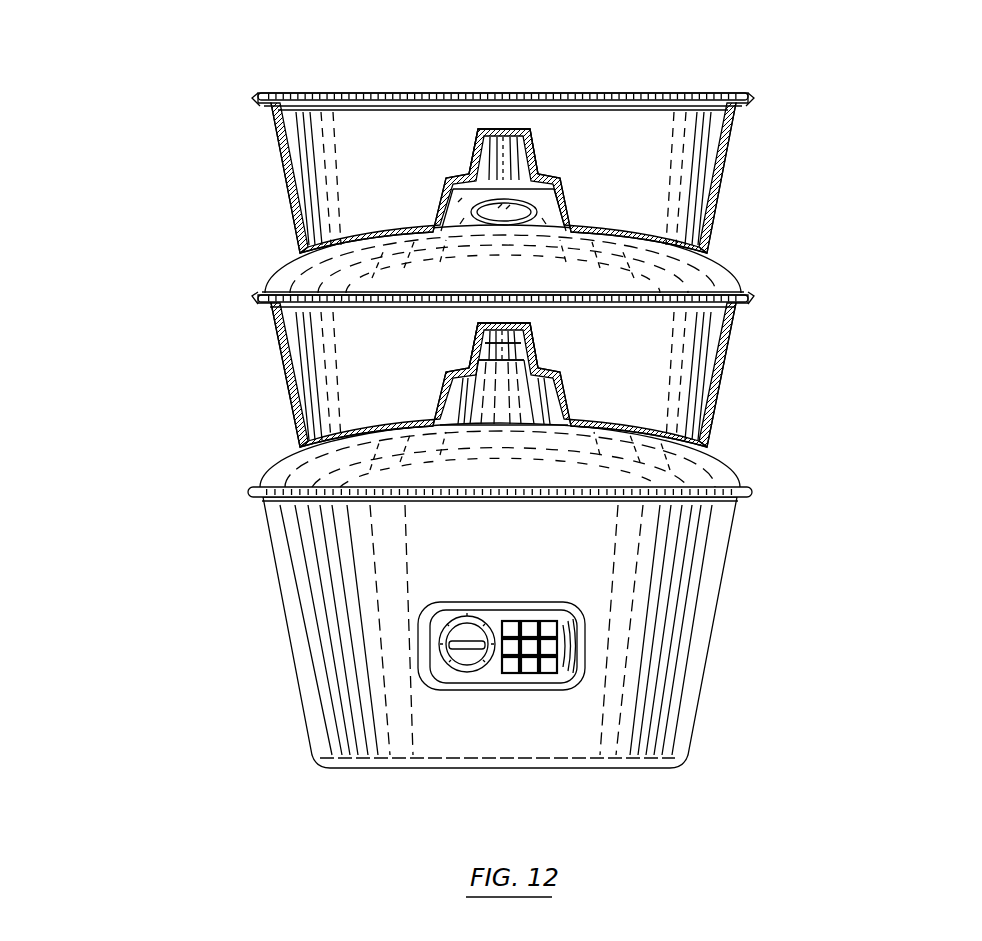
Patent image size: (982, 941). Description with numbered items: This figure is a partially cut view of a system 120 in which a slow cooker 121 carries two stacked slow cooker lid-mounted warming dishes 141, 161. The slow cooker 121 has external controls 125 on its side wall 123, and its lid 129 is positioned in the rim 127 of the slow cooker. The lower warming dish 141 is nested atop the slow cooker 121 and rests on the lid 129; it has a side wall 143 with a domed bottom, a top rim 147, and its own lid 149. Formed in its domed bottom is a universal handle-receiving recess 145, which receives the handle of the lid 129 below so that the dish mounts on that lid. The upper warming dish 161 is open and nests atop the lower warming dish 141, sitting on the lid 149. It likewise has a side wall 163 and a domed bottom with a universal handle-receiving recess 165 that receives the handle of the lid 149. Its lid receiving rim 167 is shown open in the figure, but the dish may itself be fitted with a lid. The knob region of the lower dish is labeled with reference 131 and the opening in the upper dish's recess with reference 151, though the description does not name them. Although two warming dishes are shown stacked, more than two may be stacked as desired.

The system 120 is at (105, 22).
The slow cooker 121 is at (478, 613).
The side wall 123 is at (688, 671).
The external controls 125 is at (487, 602).
The rim 127 is at (250, 490).
The lid 129 is at (706, 472).
The knob ring 131 is at (532, 393).
The warming dish 141 is at (477, 351).
The side wall 143 is at (282, 372).
The universal handle-receiving recess 145 is at (478, 328).
The top rim 147 is at (258, 292).
The lid 149 is at (698, 283).
The opening 151 is at (560, 208).
The warming dish 161 is at (484, 158).
The side wall 163 is at (285, 179).
The universal handle-receiving recess 165 is at (481, 131).
The lid receiving rim 167 is at (262, 95).